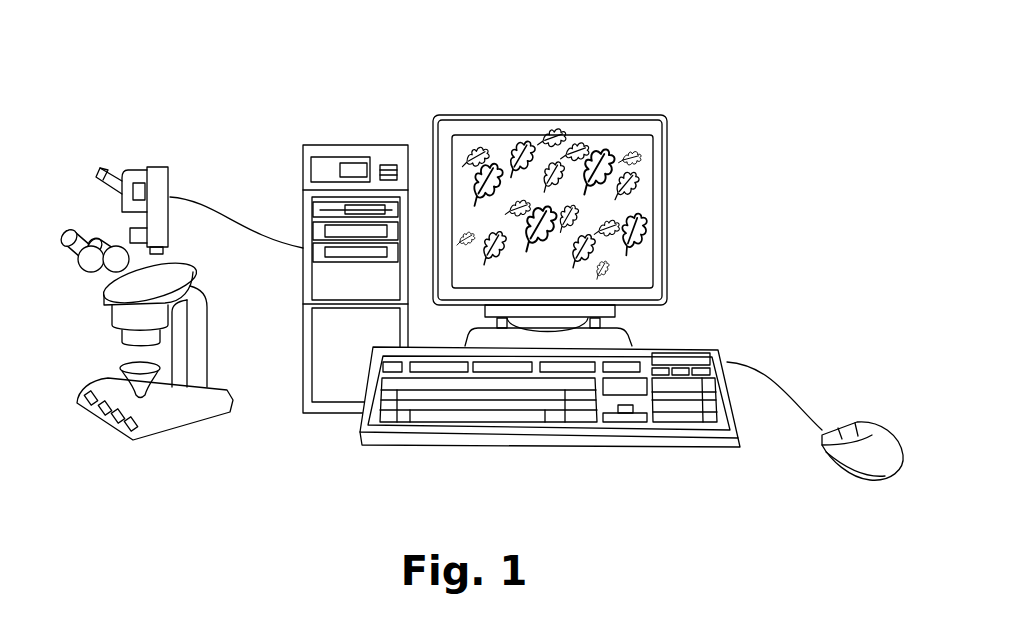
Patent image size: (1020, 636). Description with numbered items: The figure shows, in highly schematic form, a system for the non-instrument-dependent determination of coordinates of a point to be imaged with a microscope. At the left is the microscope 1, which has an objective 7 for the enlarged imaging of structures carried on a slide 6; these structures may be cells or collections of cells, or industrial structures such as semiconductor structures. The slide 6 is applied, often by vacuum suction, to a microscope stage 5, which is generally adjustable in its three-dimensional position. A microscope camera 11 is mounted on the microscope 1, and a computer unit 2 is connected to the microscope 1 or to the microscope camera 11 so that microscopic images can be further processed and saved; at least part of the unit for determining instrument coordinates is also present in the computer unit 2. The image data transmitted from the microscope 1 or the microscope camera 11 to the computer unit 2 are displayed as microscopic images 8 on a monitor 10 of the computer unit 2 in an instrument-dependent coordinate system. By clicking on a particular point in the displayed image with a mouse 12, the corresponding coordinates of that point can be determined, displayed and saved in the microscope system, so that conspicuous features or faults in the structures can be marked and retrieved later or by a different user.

The microscope 1 is at (127, 302).
The computer unit 2 is at (392, 157).
The microscope stage 5 is at (155, 405).
The slide 6 is at (155, 372).
The objective 7 is at (140, 337).
The microscopic images 8 is at (628, 188).
The monitor 10 is at (565, 177).
The microscope camera 11 is at (148, 176).
The mouse 12 is at (867, 458).